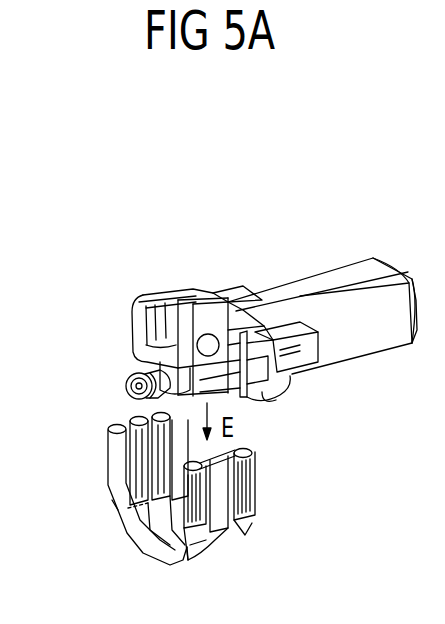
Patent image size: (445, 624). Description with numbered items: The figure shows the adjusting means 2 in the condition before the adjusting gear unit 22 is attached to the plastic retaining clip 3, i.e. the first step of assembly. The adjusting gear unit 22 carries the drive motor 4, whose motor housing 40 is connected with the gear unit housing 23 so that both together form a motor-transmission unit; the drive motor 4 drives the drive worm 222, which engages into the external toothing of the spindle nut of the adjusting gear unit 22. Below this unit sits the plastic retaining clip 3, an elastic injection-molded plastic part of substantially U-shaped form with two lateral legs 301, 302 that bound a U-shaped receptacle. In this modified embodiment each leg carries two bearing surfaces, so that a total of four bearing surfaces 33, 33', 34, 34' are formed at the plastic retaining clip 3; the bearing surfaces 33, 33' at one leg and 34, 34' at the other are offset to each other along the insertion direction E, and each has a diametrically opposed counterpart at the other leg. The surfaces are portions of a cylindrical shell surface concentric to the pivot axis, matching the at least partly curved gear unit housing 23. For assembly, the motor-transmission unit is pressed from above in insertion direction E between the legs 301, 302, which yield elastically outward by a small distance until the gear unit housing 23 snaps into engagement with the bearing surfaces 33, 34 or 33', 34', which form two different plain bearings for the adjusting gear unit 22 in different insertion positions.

The adjusting means 2 is at (215, 230).
The drive motor 4 is at (332, 282).
The motor housing 40 is at (363, 345).
The adjusting gear unit 22 is at (166, 286).
The gear unit housing 23 is at (150, 340).
The drive worm 222 is at (131, 387).
The plastic retaining clip 3 is at (245, 535).
The bearing surface 34 is at (105, 461).
The lateral leg 301 is at (118, 500).
The bearing surface 34' is at (123, 505).
The bearing surface 33 is at (140, 519).
The bearing surface 33' is at (157, 557).
The lateral leg 302 is at (177, 543).